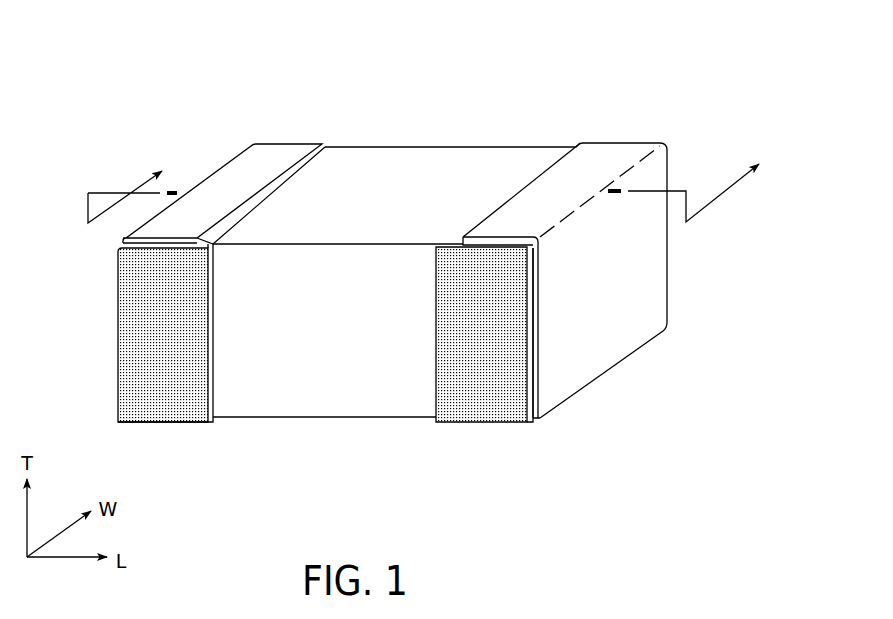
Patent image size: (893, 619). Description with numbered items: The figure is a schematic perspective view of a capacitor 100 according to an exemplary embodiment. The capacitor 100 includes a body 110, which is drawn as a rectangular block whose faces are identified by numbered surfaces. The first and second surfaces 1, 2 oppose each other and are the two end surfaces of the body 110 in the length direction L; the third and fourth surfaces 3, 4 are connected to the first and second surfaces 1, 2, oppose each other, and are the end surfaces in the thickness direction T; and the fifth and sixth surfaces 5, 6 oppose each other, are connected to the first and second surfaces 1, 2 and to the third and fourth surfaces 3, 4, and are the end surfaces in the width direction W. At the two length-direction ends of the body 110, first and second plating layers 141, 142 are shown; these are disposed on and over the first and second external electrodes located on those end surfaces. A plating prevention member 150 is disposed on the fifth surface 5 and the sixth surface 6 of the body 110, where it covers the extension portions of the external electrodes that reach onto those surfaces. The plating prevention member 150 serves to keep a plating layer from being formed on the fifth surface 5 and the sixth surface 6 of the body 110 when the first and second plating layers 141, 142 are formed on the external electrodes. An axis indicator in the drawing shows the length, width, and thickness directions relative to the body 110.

The capacitor 100 is at (363, 27).
The body 110 is at (502, 167).
The first plating layer 141 is at (273, 156).
The second plating layer 142 is at (612, 153).
The plating prevention member 150 is at (163, 412).
The first surface 1 is at (375, 196).
The second surface 2 is at (370, 364).
The third surface 3 is at (116, 285).
The fourth surface 4 is at (609, 277).
The fifth surface 5 is at (290, 353).
The sixth surface 6 is at (441, 191).